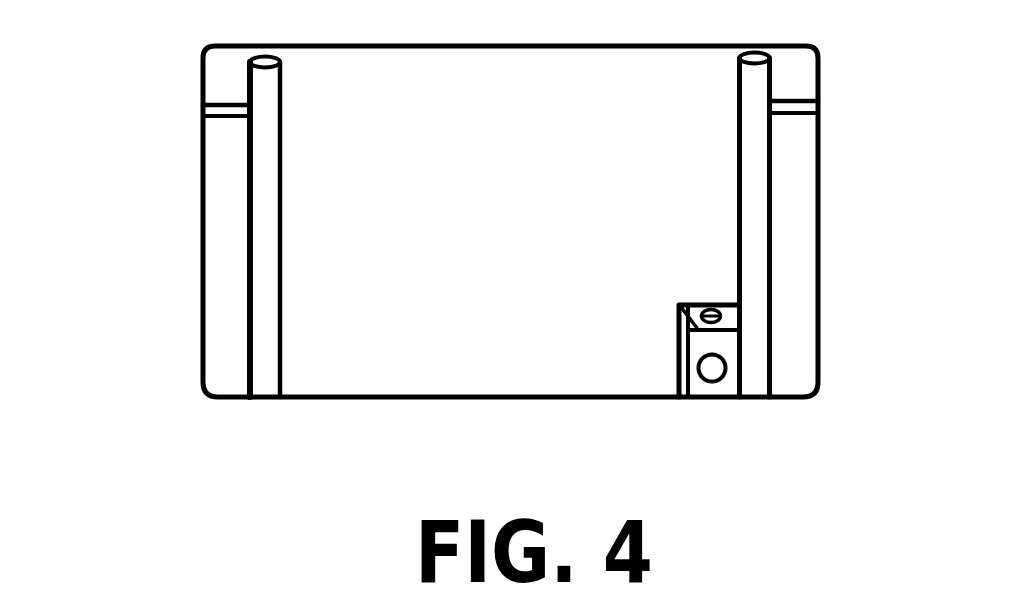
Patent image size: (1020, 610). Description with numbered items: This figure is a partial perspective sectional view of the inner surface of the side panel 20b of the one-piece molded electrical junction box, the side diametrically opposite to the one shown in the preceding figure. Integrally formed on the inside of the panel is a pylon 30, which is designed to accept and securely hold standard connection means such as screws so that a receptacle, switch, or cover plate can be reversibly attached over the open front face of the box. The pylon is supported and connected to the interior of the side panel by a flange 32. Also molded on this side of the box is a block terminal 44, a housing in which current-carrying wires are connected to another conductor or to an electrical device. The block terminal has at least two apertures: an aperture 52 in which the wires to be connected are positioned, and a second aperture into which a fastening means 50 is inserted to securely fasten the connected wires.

The frame / housing member 20b is at (325, 350).
The pylon 30 is at (250, 93).
The flange 32 is at (228, 208).
The block terminal 44 is at (679, 343).
The fastening means 50 is at (710, 306).
The aperture 52 is at (718, 400).